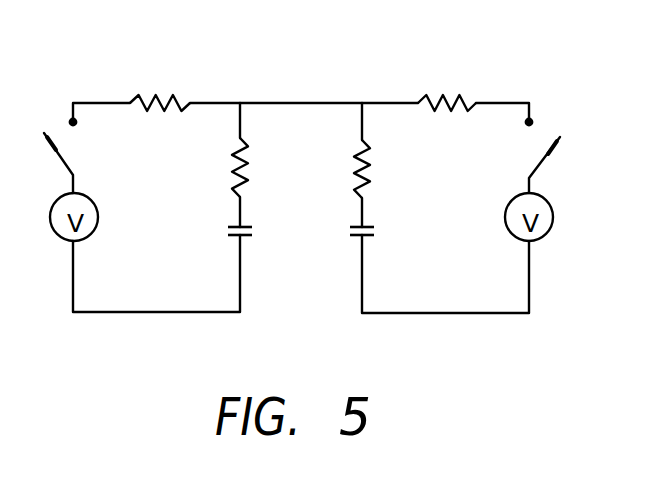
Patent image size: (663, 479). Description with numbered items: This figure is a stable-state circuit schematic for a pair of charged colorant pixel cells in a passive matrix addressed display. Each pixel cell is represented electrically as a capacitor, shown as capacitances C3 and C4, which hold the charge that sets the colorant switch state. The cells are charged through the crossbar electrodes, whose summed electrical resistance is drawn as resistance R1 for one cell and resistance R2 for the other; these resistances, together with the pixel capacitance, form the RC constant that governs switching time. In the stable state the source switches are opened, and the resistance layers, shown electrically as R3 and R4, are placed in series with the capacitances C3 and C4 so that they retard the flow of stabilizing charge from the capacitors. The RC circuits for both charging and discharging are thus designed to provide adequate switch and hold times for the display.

The charging circuit resistance R1 is at (160, 80).
The charging circuit resistance R2 is at (447, 80).
The resistance layer R3 is at (219, 167).
The resistance layer R4 is at (383, 169).
The pixel cell capacitance C3 is at (219, 235).
The pixel cell capacitance C4 is at (381, 235).